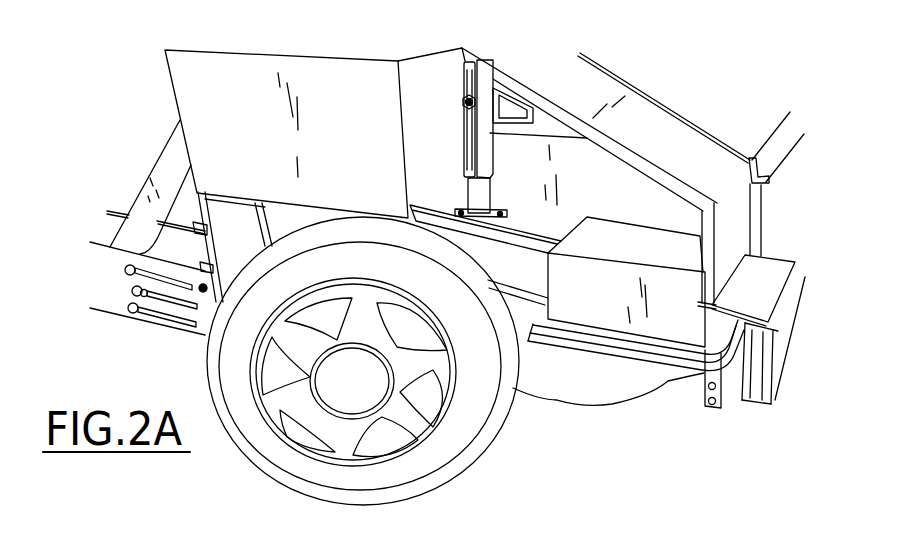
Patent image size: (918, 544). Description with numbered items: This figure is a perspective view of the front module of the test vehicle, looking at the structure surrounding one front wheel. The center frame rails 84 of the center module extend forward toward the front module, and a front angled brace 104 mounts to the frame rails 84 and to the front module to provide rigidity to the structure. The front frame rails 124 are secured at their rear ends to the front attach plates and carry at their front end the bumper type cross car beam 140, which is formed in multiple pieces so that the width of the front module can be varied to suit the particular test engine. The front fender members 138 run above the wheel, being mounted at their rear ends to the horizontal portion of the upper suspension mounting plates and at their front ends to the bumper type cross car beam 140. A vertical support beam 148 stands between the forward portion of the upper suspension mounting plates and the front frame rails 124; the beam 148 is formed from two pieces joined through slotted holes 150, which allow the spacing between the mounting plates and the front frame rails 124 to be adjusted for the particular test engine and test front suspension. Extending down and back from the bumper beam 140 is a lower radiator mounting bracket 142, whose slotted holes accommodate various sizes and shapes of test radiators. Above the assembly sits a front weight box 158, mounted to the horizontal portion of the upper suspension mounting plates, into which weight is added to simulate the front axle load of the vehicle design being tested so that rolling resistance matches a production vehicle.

The front weight box 158 is at (173, 73).
The front angled brace 104 is at (162, 152).
The slotted holes 150 is at (465, 148).
The vertical support beam 148 is at (493, 158).
The front frame rail 124 is at (556, 222).
The front fender member 138 is at (687, 118).
The center frame rail 84 is at (142, 327).
The lower radiator mounting bracket 142 is at (703, 404).
The bumper type cross car beam 140 is at (773, 404).